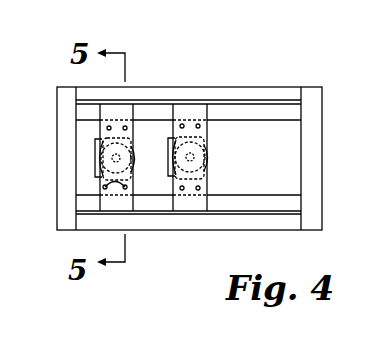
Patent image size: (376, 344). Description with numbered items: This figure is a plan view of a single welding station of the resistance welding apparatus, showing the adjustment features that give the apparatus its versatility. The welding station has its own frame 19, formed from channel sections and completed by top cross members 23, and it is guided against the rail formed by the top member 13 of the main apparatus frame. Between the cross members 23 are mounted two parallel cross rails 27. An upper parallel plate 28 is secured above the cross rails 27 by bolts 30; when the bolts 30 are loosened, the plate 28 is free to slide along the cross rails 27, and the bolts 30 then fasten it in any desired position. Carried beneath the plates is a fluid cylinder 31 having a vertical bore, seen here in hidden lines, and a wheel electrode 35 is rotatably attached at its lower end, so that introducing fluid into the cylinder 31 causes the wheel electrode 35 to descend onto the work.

The top member 13 is at (62, 117).
The frame 19 is at (330, 157).
The top cross members 23 is at (266, 90).
The cross rails 27 is at (263, 116).
The upper parallel plate 28 is at (129, 182).
The bolts 30 is at (110, 126).
The fluid cylinder 31 is at (137, 156).
The wheel electrode 35 is at (99, 141).